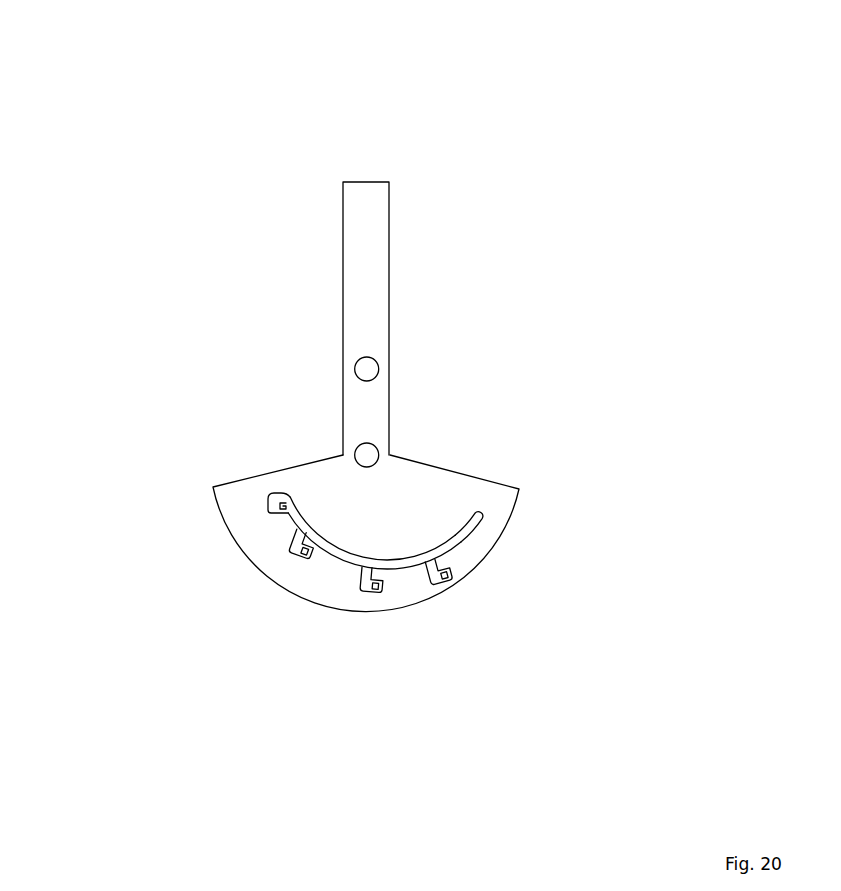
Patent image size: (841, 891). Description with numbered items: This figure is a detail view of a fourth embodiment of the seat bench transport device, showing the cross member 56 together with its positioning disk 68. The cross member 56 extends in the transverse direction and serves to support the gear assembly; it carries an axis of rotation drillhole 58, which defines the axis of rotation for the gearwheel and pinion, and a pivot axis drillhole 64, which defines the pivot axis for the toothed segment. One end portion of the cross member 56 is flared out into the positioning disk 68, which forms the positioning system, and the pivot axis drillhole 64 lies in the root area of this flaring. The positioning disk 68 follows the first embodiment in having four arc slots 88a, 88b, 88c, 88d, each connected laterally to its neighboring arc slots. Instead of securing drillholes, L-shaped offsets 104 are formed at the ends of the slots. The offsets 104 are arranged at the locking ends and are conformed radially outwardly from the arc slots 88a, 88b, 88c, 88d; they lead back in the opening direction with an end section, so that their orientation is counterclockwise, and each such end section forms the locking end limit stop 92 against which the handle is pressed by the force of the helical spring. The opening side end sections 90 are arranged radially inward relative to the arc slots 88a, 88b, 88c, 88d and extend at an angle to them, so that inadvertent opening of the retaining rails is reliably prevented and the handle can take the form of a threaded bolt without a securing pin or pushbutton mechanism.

The cross member 56 is at (61, 40).
The axis of rotation drillhole 58 is at (367, 369).
The pivot axis drillhole 64 is at (367, 455).
The positioning disk 68 is at (482, 548).
The opening side end section 90 is at (322, 541).
The locking end limit stop 92 is at (283, 514).
The offset 104 is at (268, 512).
The arc slot 88a is at (297, 527).
The arc slot 88b is at (346, 559).
The arc slot 88c is at (397, 566).
The arc slot 88d is at (463, 542).